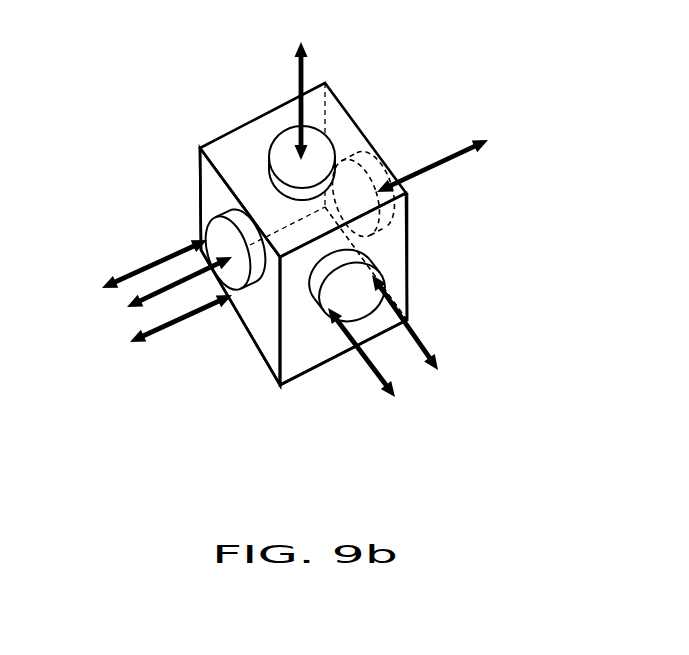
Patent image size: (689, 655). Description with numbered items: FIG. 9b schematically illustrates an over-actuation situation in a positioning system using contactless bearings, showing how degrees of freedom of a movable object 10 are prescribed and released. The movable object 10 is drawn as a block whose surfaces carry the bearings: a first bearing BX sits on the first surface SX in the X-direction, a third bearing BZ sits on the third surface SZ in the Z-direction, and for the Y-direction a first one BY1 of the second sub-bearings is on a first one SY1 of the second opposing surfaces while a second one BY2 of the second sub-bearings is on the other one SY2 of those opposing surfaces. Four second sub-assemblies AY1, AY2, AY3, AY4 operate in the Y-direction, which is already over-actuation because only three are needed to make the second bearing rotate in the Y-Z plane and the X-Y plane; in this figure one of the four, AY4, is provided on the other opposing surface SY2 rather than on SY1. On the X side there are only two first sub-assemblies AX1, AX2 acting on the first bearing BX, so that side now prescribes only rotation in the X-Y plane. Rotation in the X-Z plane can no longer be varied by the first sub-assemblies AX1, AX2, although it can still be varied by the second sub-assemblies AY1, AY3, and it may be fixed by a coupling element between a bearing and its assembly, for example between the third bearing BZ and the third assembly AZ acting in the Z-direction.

The movable object 10 is at (210, 183).
The third surface SZ is at (333, 125).
The first one of the second opposing surfaces SY1 is at (262, 325).
The second one of the second opposing surfaces SY2 is at (388, 250).
The first surface SX is at (310, 350).
The third bearing BZ is at (277, 140).
The first one of the second sub-bearings BY1 is at (213, 220).
The second one of the second sub-bearings BY2 is at (380, 170).
The first bearing BX is at (376, 272).
The third assembly AZ is at (302, 87).
The second sub-assembly AY1 is at (128, 271).
The second sub-assembly AY2 is at (152, 295).
The second sub-assembly AY3 is at (159, 332).
The second sub-assembly AY4 is at (457, 157).
The first sub-assembly AX1 is at (375, 367).
The first sub-assembly AX2 is at (427, 336).